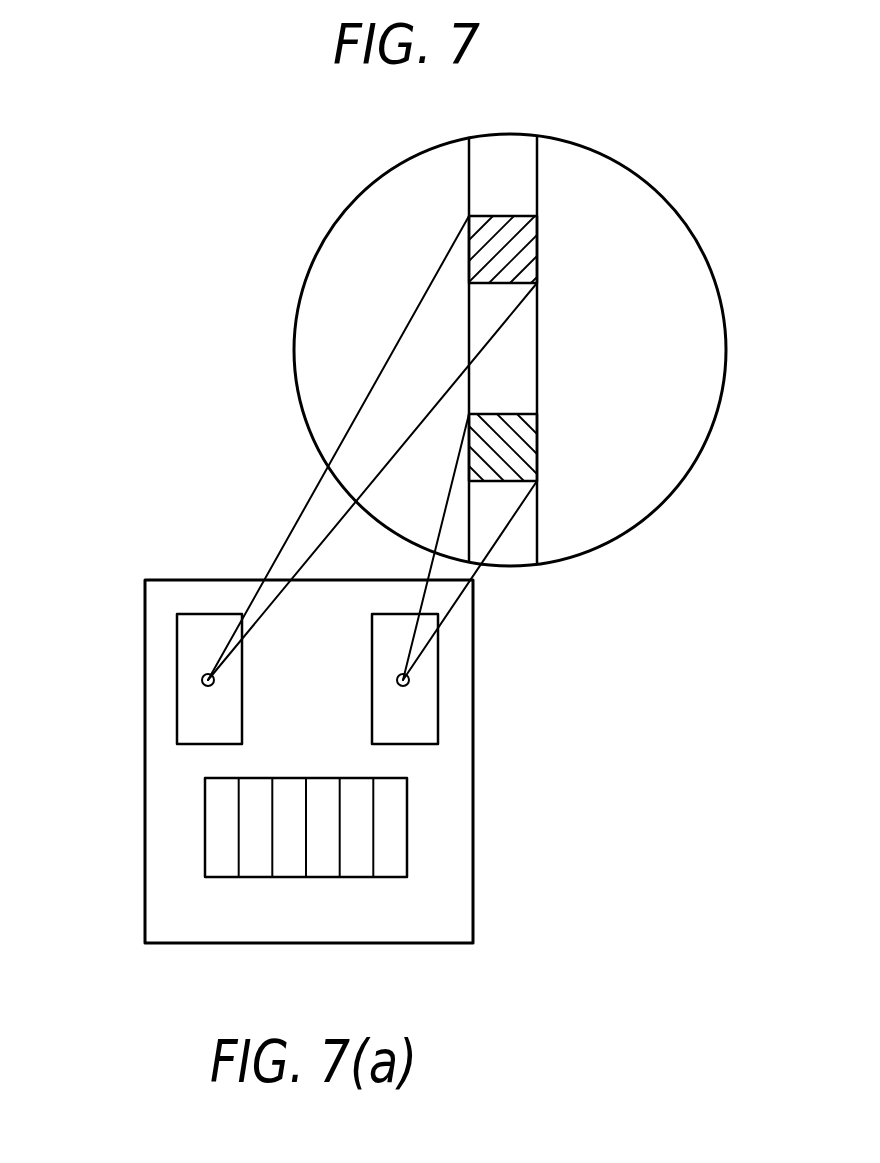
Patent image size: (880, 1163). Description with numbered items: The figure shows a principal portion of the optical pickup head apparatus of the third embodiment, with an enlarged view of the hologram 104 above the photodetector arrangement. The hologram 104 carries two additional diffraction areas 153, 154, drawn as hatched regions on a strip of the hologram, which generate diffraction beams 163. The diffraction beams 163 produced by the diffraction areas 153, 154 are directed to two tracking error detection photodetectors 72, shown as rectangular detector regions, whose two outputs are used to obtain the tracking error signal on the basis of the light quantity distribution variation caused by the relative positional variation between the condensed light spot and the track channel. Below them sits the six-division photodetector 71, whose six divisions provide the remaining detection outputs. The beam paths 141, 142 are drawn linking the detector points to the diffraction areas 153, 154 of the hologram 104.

In FIG. 7, the hologram 104 is at (718, 313).
In FIG. 7, the diffraction area 153 is at (530, 243).
In FIG. 7, the diffraction area 154 is at (523, 465).
In FIG. 7, the light beam 141 is at (400, 491).
In FIG. 7, the light beam 142 is at (595, 533).
The diffraction beam 163 is at (203, 675).
The tracking error detection photodetector 72 is at (193, 747).
The 6-division photodetector 71 is at (357, 877).